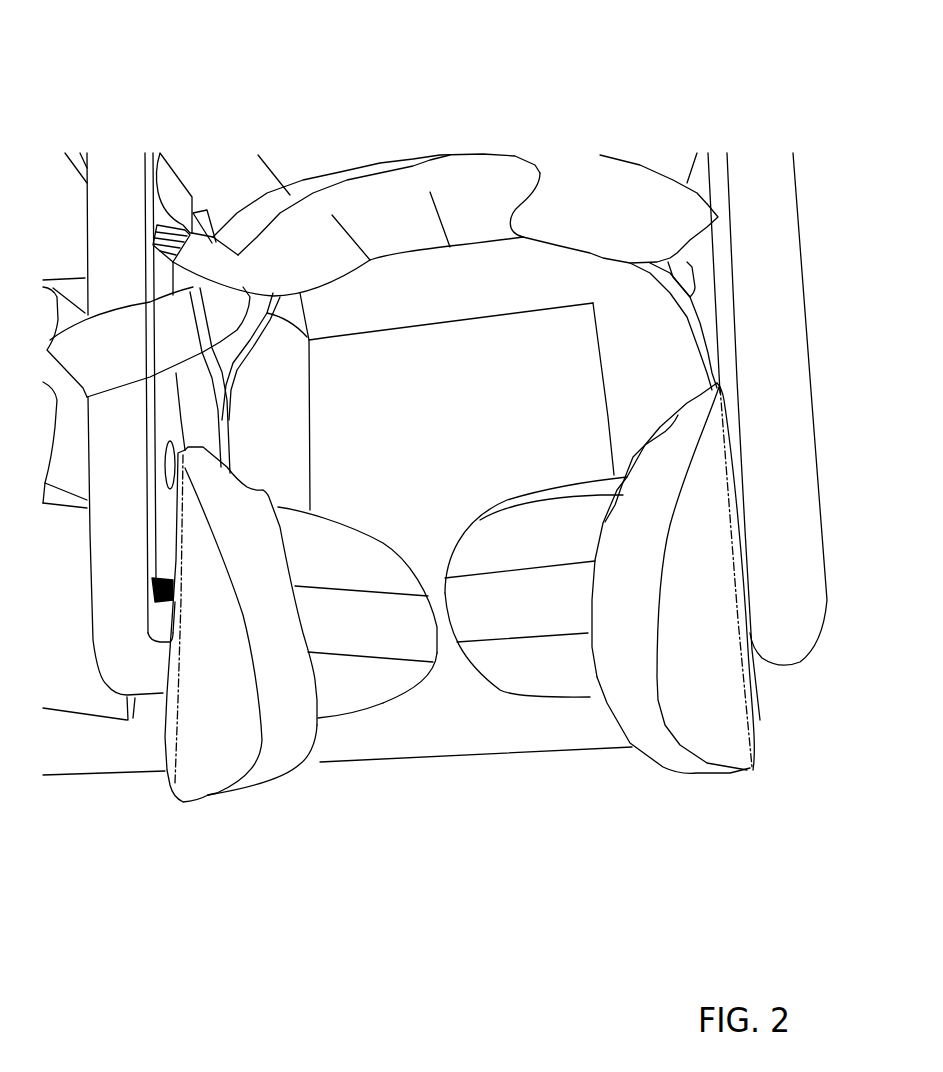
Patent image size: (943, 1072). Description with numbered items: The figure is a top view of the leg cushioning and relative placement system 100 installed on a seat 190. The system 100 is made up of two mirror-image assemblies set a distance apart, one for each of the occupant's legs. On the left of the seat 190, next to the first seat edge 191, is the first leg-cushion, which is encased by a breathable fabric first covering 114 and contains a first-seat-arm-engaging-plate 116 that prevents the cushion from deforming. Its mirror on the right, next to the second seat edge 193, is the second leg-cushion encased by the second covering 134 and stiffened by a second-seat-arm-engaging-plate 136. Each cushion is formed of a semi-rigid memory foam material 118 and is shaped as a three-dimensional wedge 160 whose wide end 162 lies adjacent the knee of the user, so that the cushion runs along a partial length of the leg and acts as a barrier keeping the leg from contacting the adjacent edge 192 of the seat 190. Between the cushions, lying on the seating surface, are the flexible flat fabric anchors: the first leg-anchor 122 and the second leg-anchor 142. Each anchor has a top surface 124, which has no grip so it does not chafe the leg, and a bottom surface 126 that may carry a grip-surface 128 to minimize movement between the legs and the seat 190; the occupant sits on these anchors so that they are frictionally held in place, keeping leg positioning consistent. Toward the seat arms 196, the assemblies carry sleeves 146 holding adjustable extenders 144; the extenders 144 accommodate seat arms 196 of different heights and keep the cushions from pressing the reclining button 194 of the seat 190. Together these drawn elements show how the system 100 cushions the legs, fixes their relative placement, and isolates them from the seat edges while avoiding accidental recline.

The leg cushioning and relative placement system 100 is at (670, 75).
The first covering 114 is at (225, 738).
The first-seat-arm-engaging-plate 116 is at (175, 777).
The semi-rigid memory foam material 118 is at (280, 737).
The first leg-anchor 122 is at (375, 625).
The top surface 124 is at (338, 565).
The bottom surface 126 is at (383, 705).
The grip-surface 128 is at (345, 715).
The second covering 134 is at (713, 708).
The second-seat-arm-engaging-plate 136 is at (750, 768).
The second leg-anchor 142 is at (543, 607).
The adjustable extenders 144 is at (151, 594).
The sleeves 146 is at (171, 611).
The 3-D wedge 160 is at (703, 776).
The wide end 162 is at (238, 800).
The seat 190 is at (460, 461).
The first seat edge 191 is at (147, 570).
The adjacent edge 192 is at (153, 642).
The second seat edge 193 is at (747, 530).
The reclining button 194 is at (168, 494).
The seat arms 196 is at (121, 497).